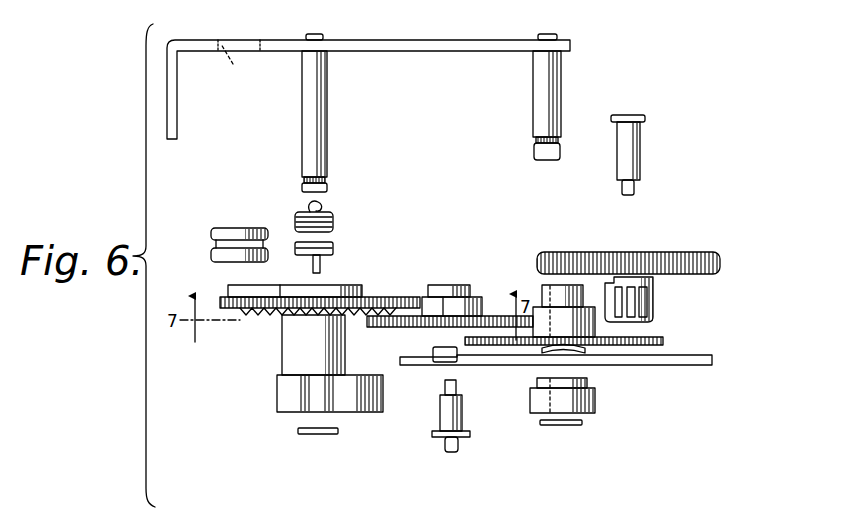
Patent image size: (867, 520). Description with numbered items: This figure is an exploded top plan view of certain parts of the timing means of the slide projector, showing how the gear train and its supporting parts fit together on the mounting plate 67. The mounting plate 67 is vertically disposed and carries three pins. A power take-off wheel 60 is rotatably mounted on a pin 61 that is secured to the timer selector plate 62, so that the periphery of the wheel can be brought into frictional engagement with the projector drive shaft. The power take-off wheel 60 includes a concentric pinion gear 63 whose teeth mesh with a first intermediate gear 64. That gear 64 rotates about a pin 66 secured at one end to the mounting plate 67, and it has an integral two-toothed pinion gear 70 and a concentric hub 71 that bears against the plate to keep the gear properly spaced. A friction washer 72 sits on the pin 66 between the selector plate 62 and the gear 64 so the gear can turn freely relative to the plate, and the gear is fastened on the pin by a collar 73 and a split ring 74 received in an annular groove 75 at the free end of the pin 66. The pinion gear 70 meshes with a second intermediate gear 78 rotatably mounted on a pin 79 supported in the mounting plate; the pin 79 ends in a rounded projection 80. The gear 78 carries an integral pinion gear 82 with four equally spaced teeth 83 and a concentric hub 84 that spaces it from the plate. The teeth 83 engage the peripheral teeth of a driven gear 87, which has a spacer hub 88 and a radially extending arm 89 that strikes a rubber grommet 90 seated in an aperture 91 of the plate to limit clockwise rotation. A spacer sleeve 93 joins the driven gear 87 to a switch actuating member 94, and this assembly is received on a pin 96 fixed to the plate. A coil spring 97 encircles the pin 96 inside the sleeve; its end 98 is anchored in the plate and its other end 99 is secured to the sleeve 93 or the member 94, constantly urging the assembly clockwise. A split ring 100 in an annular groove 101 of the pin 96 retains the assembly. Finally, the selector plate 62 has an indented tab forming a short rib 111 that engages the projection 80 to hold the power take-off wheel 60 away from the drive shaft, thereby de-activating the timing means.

The power take-off wheel 60 is at (720, 262).
The pin 61 is at (640, 172).
The timer selector plate 62 is at (690, 365).
The pinion gear 63 is at (655, 300).
The first intermediate gear 64 is at (663, 339).
The pin 66 is at (561, 93).
The mounting plate 67 is at (418, 40).
The pinion gear 70 is at (559, 313).
The hub 71 is at (576, 292).
The friction washer 72 is at (583, 352).
The collar 73 is at (596, 408).
The split ring 74 is at (571, 427).
The annular groove 75 is at (535, 143).
The second intermediate gear 78 is at (444, 334).
The pin 79 is at (441, 408).
The rounded projection 80 is at (458, 446).
The pinion gear 82 is at (428, 300).
The teeth 83 is at (480, 300).
The hub 84 is at (430, 290).
The driven gear 87 is at (226, 310).
The spacer hub 88 is at (346, 285).
The arm 89 is at (233, 296).
The rubber grommet 90 is at (223, 228).
The aperture 91 is at (234, 65).
The spacer sleeve 93 is at (290, 355).
The switch actuating member 94 is at (277, 410).
The pin 96 is at (302, 117).
The coil spring 97 is at (333, 218).
The spring end 98 is at (308, 209).
The spring end 99 is at (313, 268).
The split ring 100 is at (325, 436).
The annular groove 101 is at (302, 180).
The rib 111 is at (419, 356).